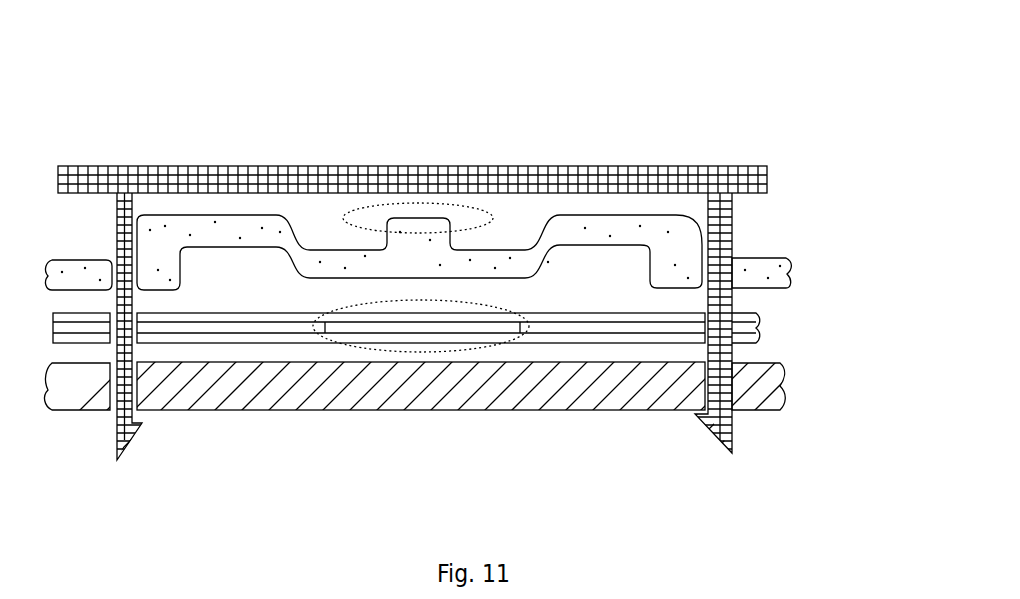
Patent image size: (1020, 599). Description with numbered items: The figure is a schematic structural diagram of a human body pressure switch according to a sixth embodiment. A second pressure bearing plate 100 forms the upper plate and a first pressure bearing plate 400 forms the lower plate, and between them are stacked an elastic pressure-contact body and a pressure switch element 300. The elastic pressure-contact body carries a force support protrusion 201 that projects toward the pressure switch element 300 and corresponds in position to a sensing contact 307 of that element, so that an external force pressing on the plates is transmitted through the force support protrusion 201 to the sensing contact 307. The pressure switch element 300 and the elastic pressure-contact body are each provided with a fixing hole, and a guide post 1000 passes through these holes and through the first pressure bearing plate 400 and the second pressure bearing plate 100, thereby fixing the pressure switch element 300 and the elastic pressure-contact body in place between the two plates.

The second pressure bearing plate 100 is at (767, 172).
The force support protrusion 201 is at (347, 221).
The pressure switch element 300 is at (758, 325).
The sensing contact 307 is at (362, 347).
The first pressure bearing plate 400 is at (513, 405).
The guide post 1000 is at (733, 427).